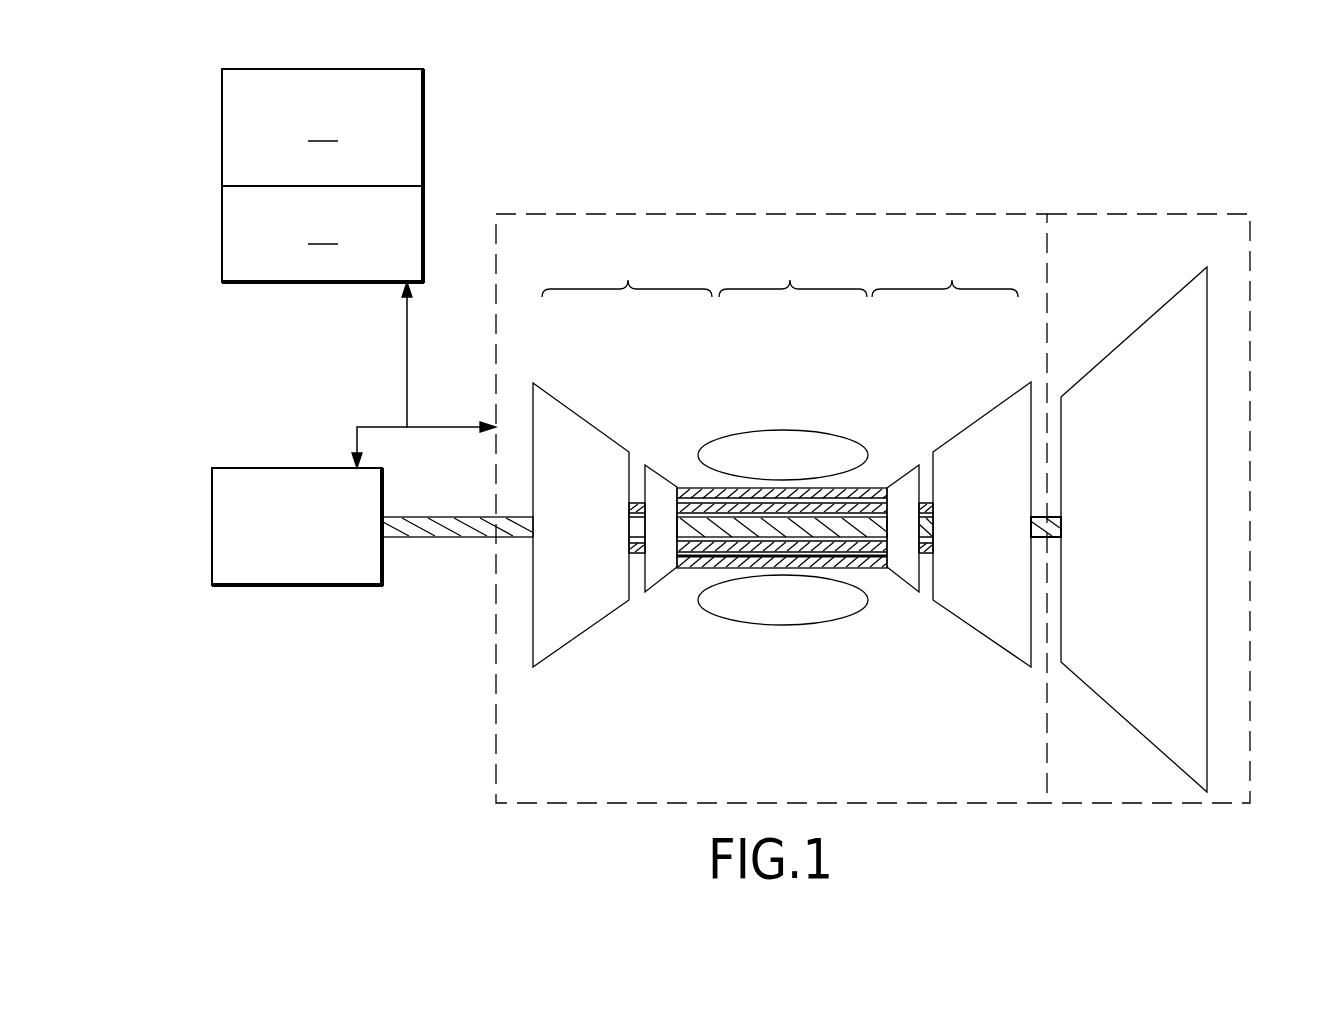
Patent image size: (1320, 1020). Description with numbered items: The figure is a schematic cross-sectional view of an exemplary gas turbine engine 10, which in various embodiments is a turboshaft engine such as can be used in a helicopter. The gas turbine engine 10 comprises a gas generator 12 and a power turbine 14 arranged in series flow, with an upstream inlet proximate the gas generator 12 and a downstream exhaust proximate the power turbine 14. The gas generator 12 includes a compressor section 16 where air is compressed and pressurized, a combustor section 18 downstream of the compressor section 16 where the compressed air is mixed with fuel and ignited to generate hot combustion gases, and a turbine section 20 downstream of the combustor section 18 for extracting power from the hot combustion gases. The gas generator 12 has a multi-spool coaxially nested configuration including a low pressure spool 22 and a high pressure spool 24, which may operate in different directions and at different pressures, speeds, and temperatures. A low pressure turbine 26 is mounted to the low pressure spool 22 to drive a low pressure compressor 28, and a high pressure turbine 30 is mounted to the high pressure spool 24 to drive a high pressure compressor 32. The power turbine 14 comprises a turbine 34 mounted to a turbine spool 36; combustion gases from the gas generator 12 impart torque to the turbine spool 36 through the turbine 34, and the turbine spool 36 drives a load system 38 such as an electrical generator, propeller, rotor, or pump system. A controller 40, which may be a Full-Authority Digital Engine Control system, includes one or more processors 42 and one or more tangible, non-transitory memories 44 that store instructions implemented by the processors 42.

The gas turbine engine 10 is at (873, 454).
The gas generator 12 is at (815, 214).
The power turbine 14 is at (1148, 476).
The compressor section 16 is at (627, 269).
The combustor section 18 is at (793, 270).
The turbine section 20 is at (945, 269).
The low pressure spool 22 is at (635, 502).
The high pressure spool 24 is at (872, 488).
The low pressure turbine 26 is at (983, 415).
The low pressure compressor 28 is at (588, 420).
The high pressure turbine 30 is at (908, 465).
The high pressure compressor 32 is at (667, 477).
The turbine 34 is at (1113, 348).
The turbine spool 36 is at (1052, 517).
The load system 38 is at (297, 586).
The controller 40 is at (322, 268).
The processors 42 is at (323, 127).
The tangible, non-transitory memories 44 is at (323, 230).